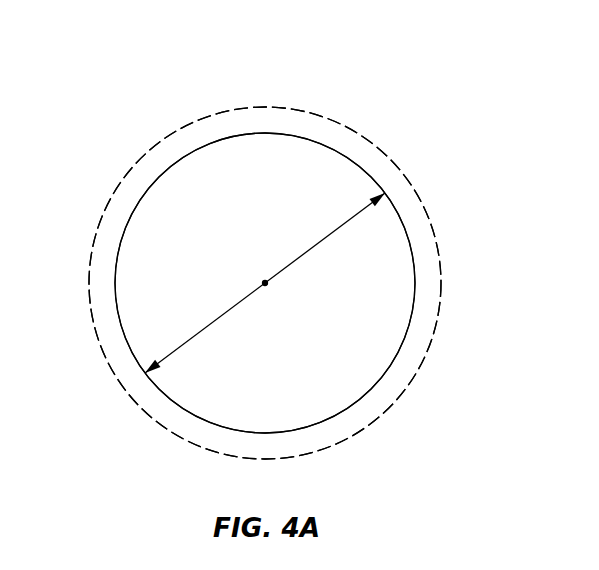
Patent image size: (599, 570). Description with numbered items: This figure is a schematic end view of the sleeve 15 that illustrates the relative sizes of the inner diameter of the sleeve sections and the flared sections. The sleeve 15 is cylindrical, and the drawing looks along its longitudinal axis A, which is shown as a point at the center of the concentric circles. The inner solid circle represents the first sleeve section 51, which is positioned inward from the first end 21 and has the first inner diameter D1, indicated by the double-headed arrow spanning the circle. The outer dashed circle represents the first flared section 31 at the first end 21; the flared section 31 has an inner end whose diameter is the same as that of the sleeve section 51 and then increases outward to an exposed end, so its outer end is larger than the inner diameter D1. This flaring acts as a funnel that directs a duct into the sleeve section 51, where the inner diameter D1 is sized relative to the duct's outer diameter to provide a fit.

The sleeve 15 is at (393, 78).
The first end 21 is at (180, 123).
The first flared section 31 is at (160, 168).
The first sleeve section 51 is at (413, 247).
The longitudinal axis A is at (265, 283).
The first inner diameter D1 is at (312, 247).